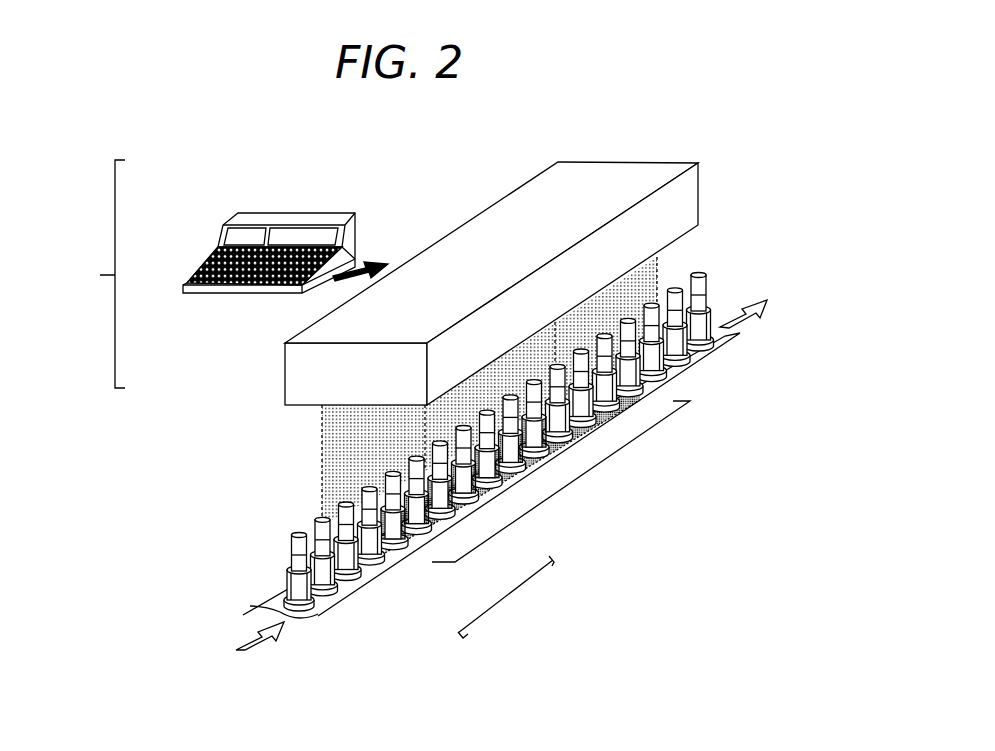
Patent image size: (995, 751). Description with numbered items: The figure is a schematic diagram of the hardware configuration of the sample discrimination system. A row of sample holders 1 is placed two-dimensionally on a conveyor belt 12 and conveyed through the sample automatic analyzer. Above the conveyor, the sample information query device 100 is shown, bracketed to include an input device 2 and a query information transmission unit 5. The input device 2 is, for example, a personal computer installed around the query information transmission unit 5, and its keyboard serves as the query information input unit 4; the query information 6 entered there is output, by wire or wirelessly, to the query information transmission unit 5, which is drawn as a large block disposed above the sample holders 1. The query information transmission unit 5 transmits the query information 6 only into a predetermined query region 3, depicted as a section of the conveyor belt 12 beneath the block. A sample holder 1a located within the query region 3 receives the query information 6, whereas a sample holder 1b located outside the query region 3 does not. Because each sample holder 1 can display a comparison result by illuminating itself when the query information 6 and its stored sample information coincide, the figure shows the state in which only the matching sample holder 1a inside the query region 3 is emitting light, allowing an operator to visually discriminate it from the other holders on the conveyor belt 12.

The sample information query device 100 is at (90, 274).
The input device 2 is at (275, 225).
The query information input unit 4 is at (213, 250).
The query information transmission unit 5 is at (507, 194).
The query information 6 is at (330, 463).
The conveyor belt 12 is at (262, 595).
The query region 3 is at (578, 478).
The sample holder 1 is at (499, 456).
The sample holder located in the query region 1a is at (478, 505).
The sample holder located outside the query region 1b is at (390, 562).